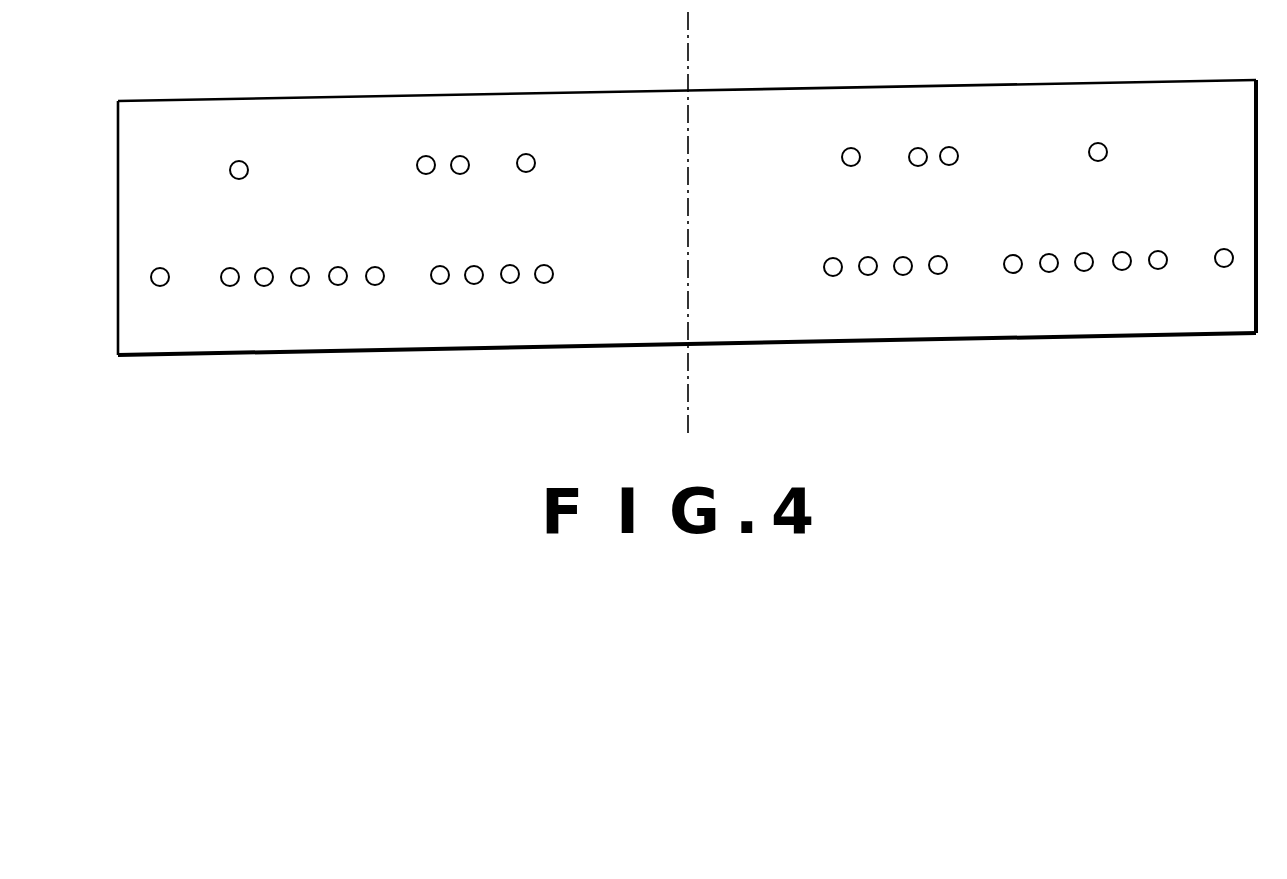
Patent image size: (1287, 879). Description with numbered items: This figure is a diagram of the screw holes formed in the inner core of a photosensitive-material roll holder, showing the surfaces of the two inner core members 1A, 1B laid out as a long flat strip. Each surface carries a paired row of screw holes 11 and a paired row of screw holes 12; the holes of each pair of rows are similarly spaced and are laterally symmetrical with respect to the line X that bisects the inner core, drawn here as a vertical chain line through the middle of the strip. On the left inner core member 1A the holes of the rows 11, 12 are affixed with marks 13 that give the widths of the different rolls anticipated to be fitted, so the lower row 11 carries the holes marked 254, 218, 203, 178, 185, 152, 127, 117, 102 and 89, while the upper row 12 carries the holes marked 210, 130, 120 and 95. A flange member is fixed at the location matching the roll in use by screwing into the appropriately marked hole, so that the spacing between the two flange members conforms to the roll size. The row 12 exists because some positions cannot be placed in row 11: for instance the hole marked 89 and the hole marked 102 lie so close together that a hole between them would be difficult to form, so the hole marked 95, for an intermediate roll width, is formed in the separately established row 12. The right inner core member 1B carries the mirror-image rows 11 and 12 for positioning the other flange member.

The inner core member 1A is at (194, 121).
The inner core member 1B is at (1155, 93).
The row of screw holes 11 is at (689, 305).
The row of screw holes 12 is at (665, 112).
The mark 13 is at (142, 206).
The line bisecting the inner core X is at (689, 39).
The hole marked 210 is at (248, 108).
The hole marked 130 is at (435, 103).
The hole marked 120 is at (469, 103).
The hole marked 95 is at (523, 143).
The hole marked 254 is at (169, 258).
The hole marked 218 is at (239, 258).
The hole marked 203 is at (273, 215).
The hole marked 178 is at (309, 215).
The hole marked 185 is at (347, 214).
The hole marked 152 is at (384, 214).
The hole marked 127 is at (449, 213).
The hole marked 117 is at (483, 213).
The hole marked 102 is at (519, 212).
The hole marked 89 is at (541, 254).